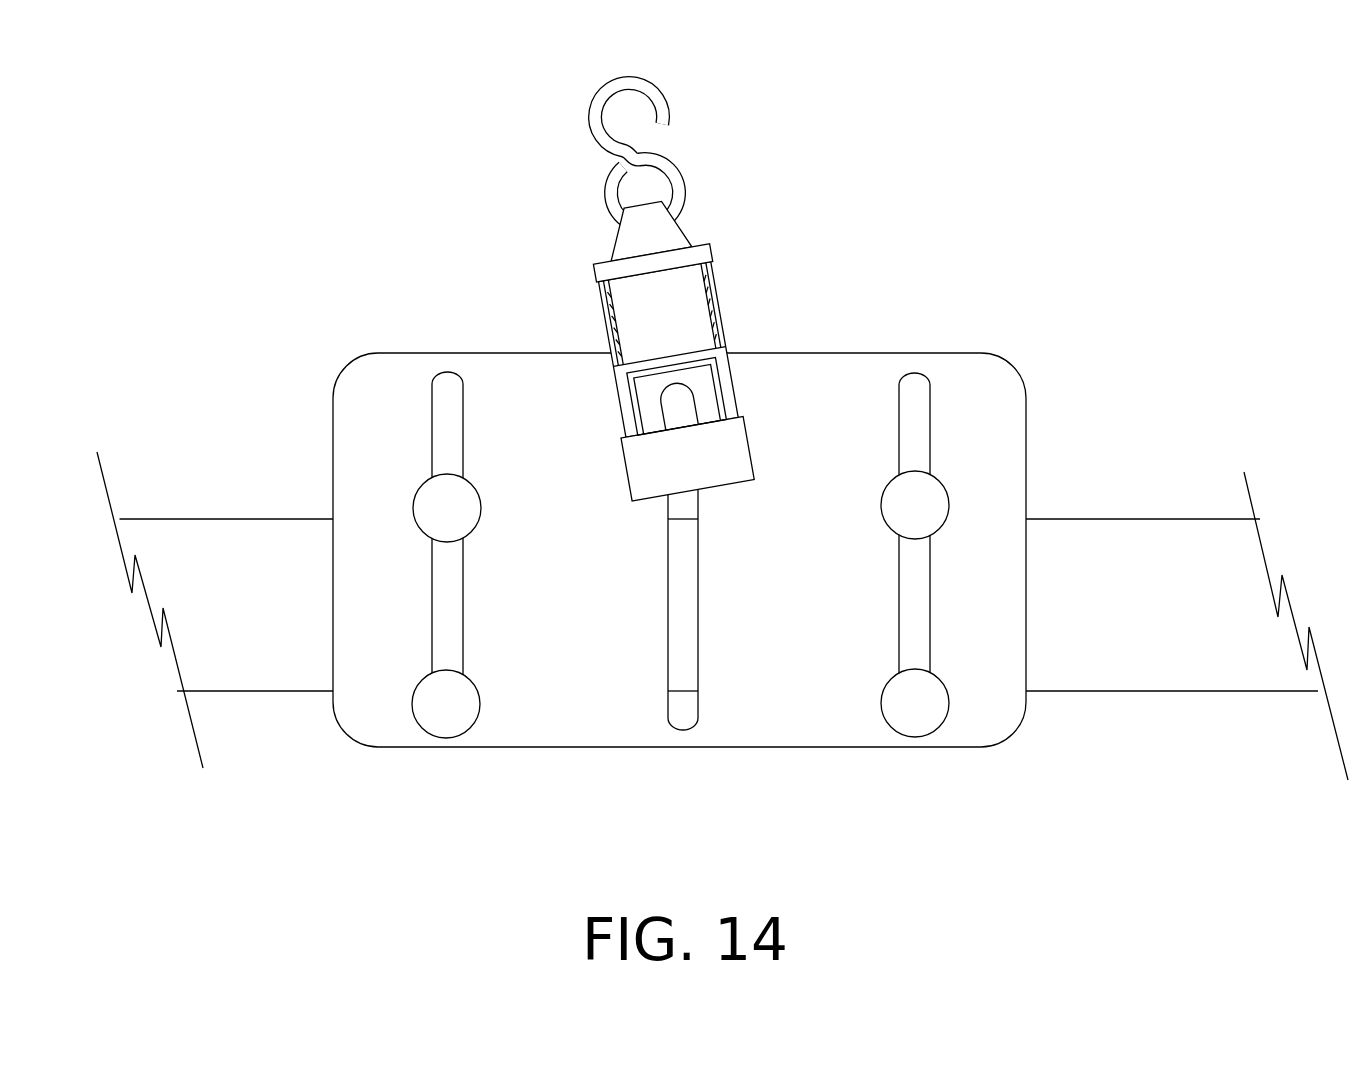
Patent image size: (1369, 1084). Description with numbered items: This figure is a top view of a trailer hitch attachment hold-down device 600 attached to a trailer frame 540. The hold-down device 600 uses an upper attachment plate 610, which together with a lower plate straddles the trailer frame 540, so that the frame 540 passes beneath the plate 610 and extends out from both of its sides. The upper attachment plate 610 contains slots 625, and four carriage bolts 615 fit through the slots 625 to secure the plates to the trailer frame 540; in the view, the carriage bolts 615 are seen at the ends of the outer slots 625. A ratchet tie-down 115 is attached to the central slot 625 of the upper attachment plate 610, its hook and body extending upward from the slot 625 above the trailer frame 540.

The trailer hitch attachment hold-down device 600 is at (247, 178).
The trailer frame 540 is at (1157, 614).
The upper attachment plate 610 is at (373, 388).
The slots 625 is at (445, 392).
The carriage bolts 615 is at (432, 513).
The ratchet tie-down 115 is at (678, 302).